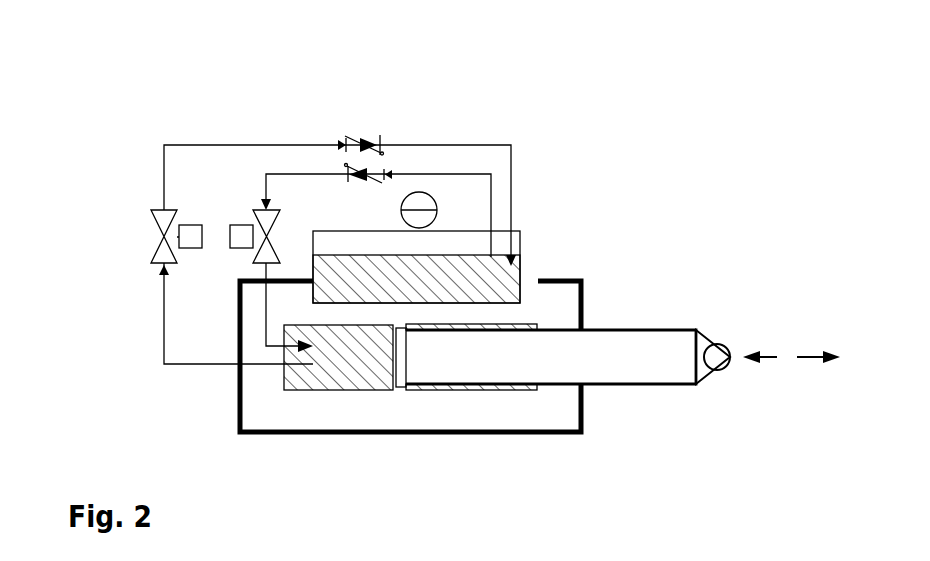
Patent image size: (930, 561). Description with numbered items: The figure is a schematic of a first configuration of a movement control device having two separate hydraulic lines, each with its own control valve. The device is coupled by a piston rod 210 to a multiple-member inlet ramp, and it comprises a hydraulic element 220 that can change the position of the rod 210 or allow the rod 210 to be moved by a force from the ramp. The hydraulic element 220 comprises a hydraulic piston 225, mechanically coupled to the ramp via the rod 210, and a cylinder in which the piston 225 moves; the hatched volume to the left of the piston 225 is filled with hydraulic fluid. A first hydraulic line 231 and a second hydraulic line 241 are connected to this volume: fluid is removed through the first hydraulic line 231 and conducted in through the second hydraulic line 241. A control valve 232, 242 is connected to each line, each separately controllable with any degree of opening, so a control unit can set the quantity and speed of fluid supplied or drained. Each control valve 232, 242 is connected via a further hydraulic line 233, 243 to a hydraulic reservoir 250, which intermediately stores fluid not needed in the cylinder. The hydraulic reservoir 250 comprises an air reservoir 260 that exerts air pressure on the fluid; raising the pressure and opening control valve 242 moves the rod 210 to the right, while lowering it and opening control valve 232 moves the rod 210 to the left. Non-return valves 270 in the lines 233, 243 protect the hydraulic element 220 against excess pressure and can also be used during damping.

The piston rod 210 is at (648, 373).
The hydraulic element 220 is at (345, 373).
The hydraulic piston 225 is at (403, 383).
The first hydraulic line 231 is at (200, 367).
The control valve 232 is at (145, 237).
The hydraulic line 233 is at (238, 133).
The second hydraulic line 241 is at (262, 305).
The control valve 242 is at (212, 218).
The hydraulic line 243 is at (461, 170).
The hydraulic reservoir 250 is at (487, 280).
The air reservoir 260 is at (445, 234).
The non-return valves 270 is at (370, 133).